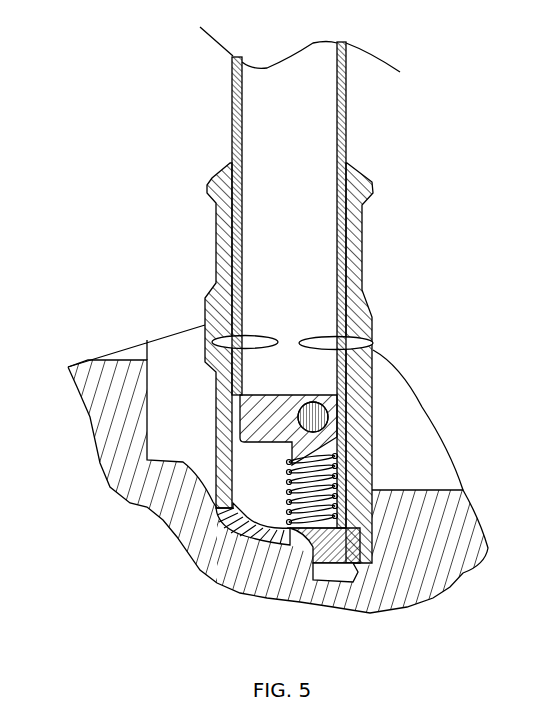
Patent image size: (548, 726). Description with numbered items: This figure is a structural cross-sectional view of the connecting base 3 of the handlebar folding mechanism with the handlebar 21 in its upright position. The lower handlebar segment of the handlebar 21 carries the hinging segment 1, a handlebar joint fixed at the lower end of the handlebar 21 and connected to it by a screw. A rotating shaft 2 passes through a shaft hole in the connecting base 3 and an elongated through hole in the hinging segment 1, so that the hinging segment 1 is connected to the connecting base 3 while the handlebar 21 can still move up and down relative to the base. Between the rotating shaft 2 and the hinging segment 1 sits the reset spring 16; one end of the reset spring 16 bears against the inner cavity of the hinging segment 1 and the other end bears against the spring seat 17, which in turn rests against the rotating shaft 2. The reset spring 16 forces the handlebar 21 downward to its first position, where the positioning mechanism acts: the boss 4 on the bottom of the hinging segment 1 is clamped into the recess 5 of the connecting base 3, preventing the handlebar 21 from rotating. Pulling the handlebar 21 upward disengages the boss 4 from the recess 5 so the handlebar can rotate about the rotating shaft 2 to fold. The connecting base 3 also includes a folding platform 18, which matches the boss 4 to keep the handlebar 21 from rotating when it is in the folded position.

The handlebar 21 is at (346, 133).
The hinging segment 1 is at (363, 290).
The spring seat 17 is at (306, 393).
The rotating shaft 2 is at (341, 392).
The reset spring 16 is at (363, 470).
The folding platform 18 is at (123, 495).
The connecting base 3 is at (150, 506).
The boss 4 is at (358, 540).
The recess 5 is at (337, 567).